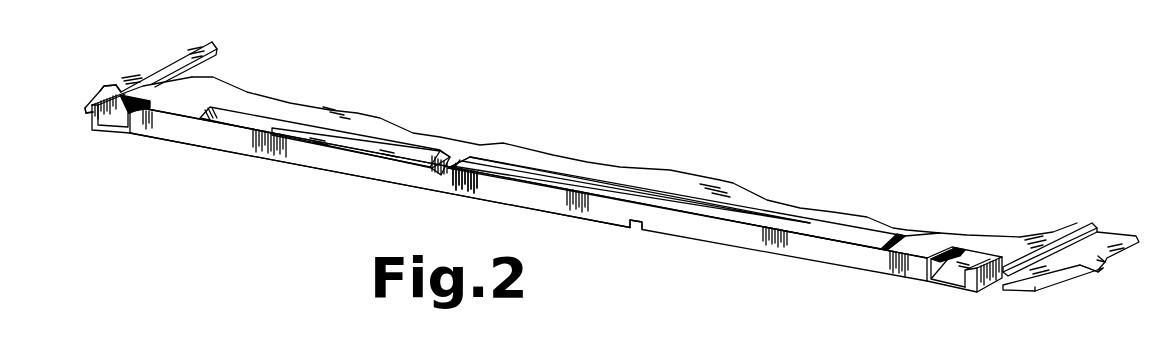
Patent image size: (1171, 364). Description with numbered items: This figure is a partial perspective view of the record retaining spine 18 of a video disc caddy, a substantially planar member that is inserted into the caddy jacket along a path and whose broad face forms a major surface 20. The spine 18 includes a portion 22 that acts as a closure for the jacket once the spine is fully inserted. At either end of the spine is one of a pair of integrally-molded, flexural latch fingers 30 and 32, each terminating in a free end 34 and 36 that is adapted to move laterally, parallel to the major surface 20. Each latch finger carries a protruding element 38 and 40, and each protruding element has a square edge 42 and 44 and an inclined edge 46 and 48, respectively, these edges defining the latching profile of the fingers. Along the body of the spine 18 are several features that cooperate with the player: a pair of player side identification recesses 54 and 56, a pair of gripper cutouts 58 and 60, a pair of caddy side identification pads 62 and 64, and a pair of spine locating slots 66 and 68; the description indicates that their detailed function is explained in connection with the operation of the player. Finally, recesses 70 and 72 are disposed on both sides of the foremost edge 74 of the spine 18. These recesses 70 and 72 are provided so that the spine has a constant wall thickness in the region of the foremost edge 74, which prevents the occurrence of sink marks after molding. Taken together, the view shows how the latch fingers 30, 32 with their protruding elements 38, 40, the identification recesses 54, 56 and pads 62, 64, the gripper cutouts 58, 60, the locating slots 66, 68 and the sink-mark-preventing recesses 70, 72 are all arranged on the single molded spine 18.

The record retaining spine 18 is at (253, 174).
The major surface 20 is at (657, 185).
The closure portion 22 is at (752, 256).
The flexural latch finger 30 is at (1123, 238).
The flexural latch finger 32 is at (186, 55).
The free end 34 is at (1030, 292).
The free end 36 is at (88, 113).
The protruding element 38 is at (1090, 253).
The protruding element 40 is at (125, 85).
The square edge 42 is at (1095, 275).
The square edge 44 is at (102, 83).
The inclined edge 46 is at (1105, 263).
The inclined edge 48 is at (128, 64).
The player side identification recess 54 is at (948, 276).
The player side identification recess 56 is at (118, 131).
The gripper cutout 58 is at (922, 242).
The gripper cutout 60 is at (185, 112).
The caddy side identification pad 62 is at (843, 225).
The caddy side identification pad 64 is at (325, 173).
The spine locating slot 66 is at (637, 233).
The spine locating slot 68 is at (458, 155).
The recess 70 is at (287, 132).
The recess 72 is at (553, 183).
The foremost edge 74 is at (455, 197).